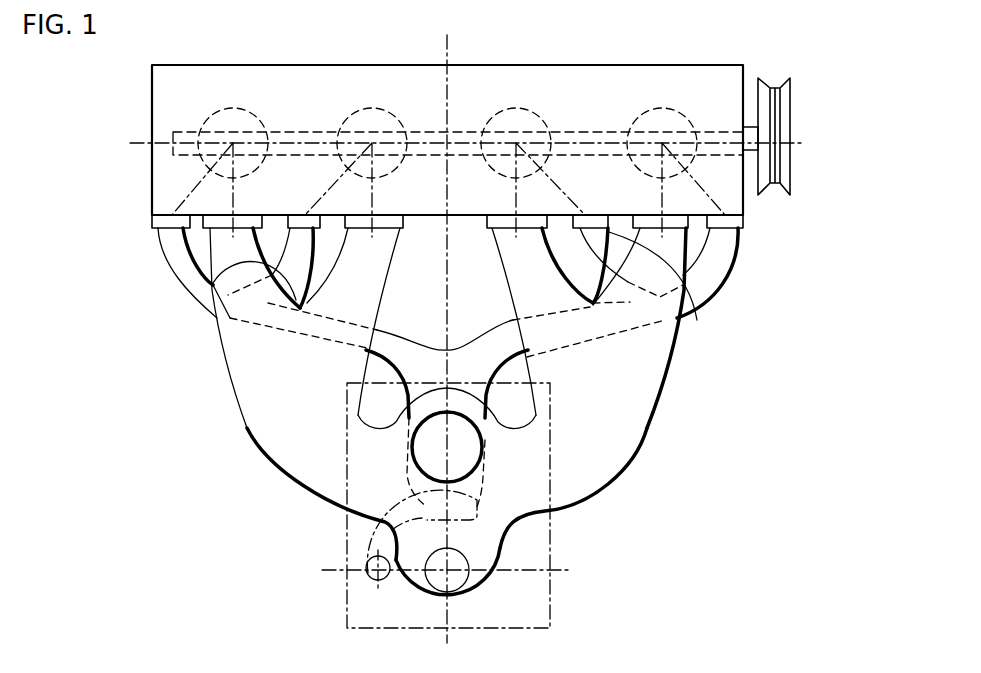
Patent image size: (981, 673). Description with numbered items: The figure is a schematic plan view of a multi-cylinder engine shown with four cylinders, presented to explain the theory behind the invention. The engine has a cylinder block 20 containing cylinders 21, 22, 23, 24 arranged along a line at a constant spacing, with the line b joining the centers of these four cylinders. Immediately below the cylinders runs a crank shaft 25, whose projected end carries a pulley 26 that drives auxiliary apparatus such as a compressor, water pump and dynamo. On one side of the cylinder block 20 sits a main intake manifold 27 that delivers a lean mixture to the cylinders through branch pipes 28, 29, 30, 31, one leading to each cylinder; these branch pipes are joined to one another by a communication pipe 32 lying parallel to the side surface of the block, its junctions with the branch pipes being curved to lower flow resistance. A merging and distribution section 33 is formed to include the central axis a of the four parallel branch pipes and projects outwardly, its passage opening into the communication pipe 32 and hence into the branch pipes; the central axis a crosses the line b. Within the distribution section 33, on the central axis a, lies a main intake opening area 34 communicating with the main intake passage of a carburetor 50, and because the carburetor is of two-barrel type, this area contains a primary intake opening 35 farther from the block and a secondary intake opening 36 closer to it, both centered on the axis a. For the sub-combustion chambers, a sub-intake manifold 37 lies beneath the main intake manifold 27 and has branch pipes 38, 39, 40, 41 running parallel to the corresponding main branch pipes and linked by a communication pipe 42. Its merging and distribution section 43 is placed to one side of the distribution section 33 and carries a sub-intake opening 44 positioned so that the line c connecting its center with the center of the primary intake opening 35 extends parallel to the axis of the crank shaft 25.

The cylinder block 20 is at (606, 100).
The cylinder 21 is at (670, 107).
The cylinder 22 is at (528, 107).
The cylinder 23 is at (378, 107).
The cylinder 24 is at (233, 107).
The crank shaft 25 is at (752, 127).
The pulley 26 is at (766, 92).
The main intake manifold 27 is at (258, 440).
The branch pipe 28 is at (722, 266).
The branch pipe 29 is at (523, 290).
The branch pipe 30 is at (382, 253).
The branch pipe 31 is at (210, 258).
The communication pipe 32 is at (285, 488).
The merging and distribution section 33 is at (475, 610).
The main intake opening area 34 is at (452, 574).
The primary intake opening 35 is at (430, 580).
The secondary intake opening 36 is at (480, 447).
The sub-intake manifold 37 is at (716, 293).
The branch pipe 38 is at (735, 238).
The branch pipe 39 is at (700, 305).
The branch pipe 40 is at (223, 282).
The branch pipe 41 is at (167, 245).
The communication pipe 42 is at (683, 320).
The merging and distribution section 43 is at (368, 535).
The sub-intake opening 44 is at (365, 580).
The carburetor 50 is at (550, 583).
The central axis a is at (448, 354).
The line b is at (152, 143).
The line c is at (457, 569).